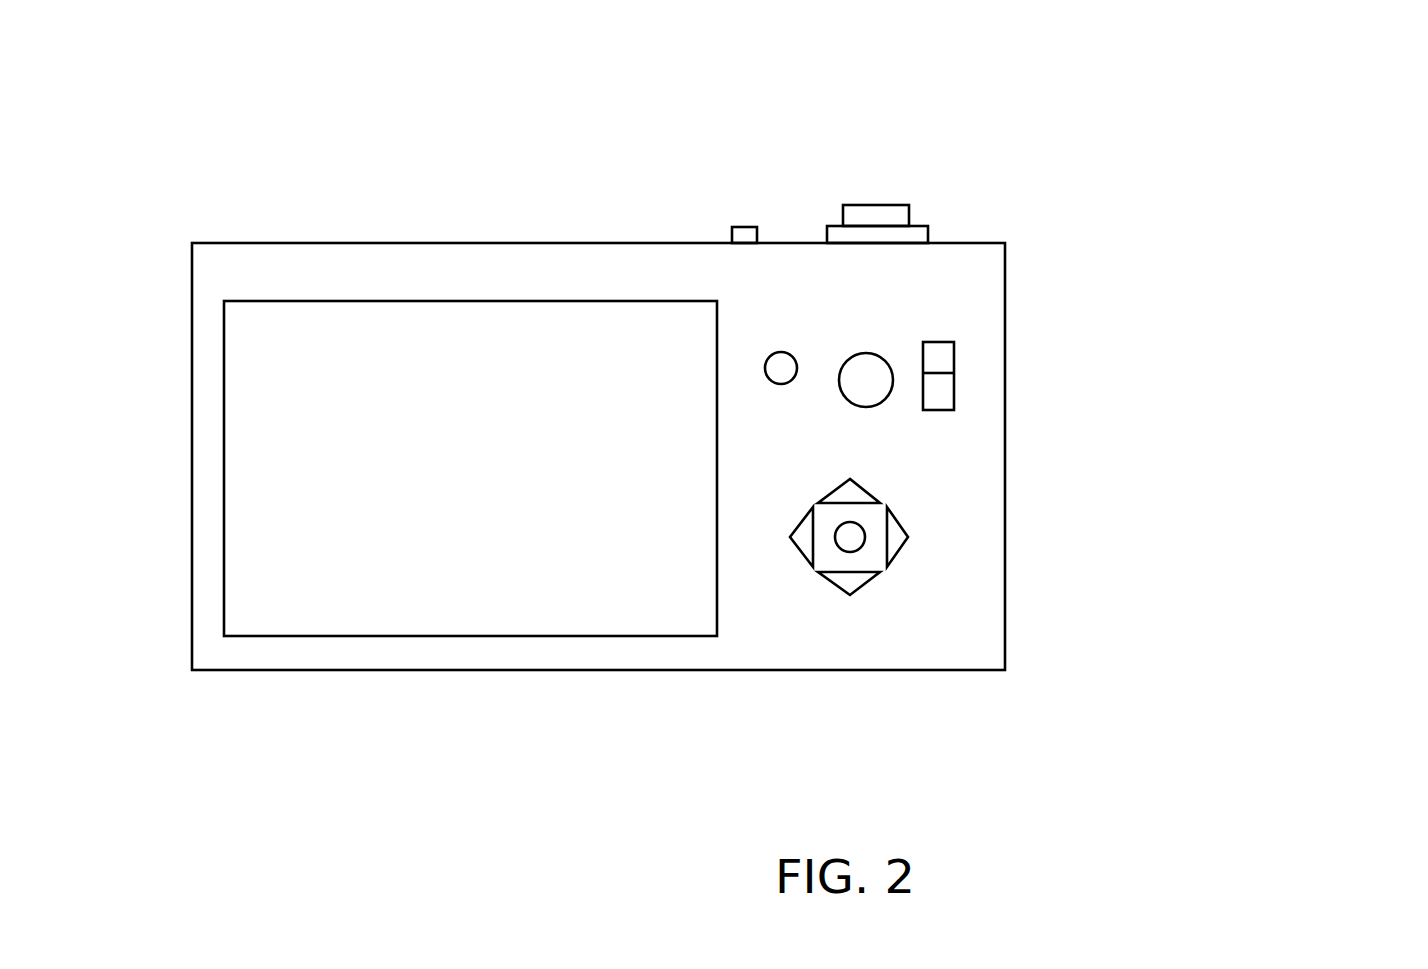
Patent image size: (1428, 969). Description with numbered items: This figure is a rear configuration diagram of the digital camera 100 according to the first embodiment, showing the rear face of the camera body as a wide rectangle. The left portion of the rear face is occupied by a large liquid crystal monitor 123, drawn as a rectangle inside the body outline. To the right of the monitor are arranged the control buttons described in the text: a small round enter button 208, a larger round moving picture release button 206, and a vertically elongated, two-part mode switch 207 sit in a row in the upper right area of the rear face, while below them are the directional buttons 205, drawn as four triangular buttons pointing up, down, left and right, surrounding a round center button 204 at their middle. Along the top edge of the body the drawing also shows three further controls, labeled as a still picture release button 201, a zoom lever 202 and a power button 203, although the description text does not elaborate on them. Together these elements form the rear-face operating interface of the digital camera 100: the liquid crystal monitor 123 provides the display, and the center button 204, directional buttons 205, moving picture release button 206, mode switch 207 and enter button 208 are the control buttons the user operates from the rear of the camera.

The digital camera 100 is at (188, 177).
The liquid crystal monitor 123 is at (406, 455).
The still picture release button 201 is at (900, 213).
The zoom lever 202 is at (920, 240).
The power button 203 is at (732, 227).
The center button 204 is at (850, 537).
The directional buttons 205 is at (845, 578).
The moving picture release button 206 is at (866, 380).
The mode switch 207 is at (932, 384).
The enter button 208 is at (777, 360).